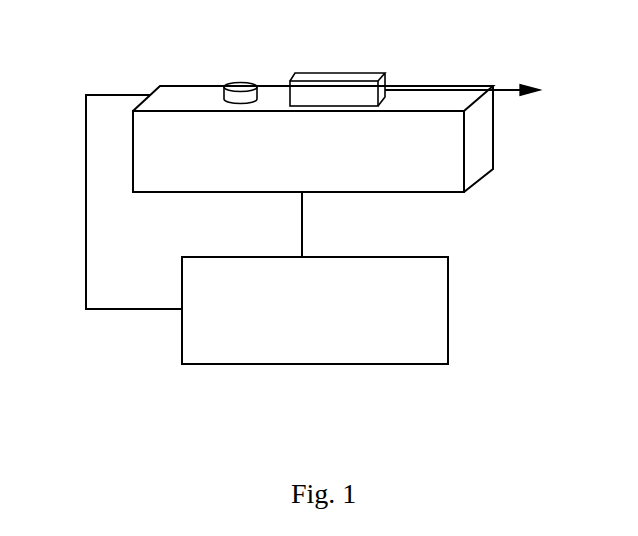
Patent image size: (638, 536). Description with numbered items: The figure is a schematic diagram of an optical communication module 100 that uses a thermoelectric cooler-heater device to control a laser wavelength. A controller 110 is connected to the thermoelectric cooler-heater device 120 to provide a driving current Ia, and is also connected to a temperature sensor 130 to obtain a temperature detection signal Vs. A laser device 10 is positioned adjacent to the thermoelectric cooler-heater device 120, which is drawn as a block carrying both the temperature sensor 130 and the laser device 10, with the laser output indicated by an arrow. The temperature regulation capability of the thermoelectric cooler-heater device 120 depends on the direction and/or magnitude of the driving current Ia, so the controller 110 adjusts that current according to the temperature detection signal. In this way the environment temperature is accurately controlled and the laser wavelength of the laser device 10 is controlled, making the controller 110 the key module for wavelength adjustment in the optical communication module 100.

The optical communication module 100 is at (283, 213).
The controller 110 is at (333, 322).
The thermoelectric cooler-heater device 120 is at (317, 162).
The temperature sensor 130 is at (238, 83).
The laser device 10 is at (337, 77).